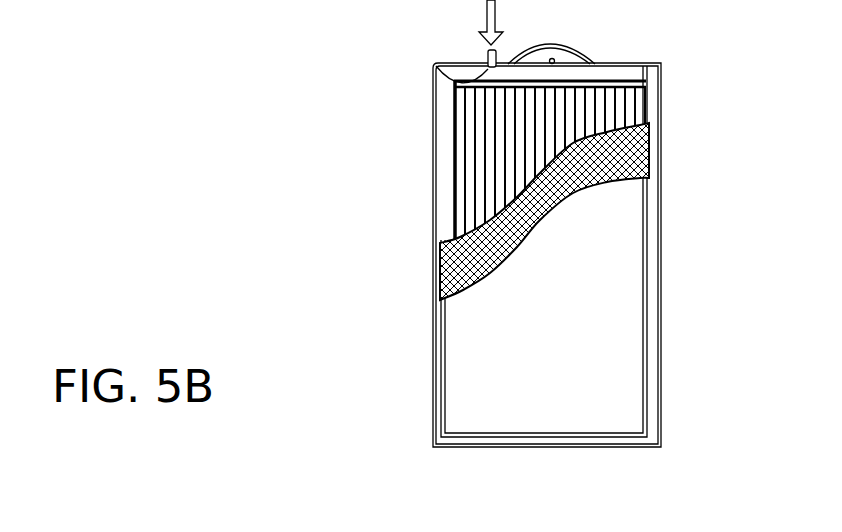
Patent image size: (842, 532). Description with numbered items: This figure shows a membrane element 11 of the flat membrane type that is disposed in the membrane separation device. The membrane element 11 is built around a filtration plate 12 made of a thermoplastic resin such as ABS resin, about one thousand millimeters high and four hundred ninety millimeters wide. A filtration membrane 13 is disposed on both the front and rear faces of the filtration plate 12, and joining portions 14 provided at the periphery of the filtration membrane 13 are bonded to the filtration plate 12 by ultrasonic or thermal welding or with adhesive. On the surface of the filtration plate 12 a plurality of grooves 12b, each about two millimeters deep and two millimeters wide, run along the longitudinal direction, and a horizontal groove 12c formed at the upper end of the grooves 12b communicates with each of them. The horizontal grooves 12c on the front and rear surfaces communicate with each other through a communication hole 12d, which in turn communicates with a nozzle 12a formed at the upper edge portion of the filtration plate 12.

The membrane element 11 is at (292, 141).
The filtration plate 12 is at (437, 219).
The nozzle 12a is at (484, 61).
The grooves 12b is at (464, 152).
The horizontal groove 12c is at (432, 68).
The communication hole 12d is at (522, 50).
The filtration membrane 13 is at (560, 346).
The joining portions 14 is at (438, 349).